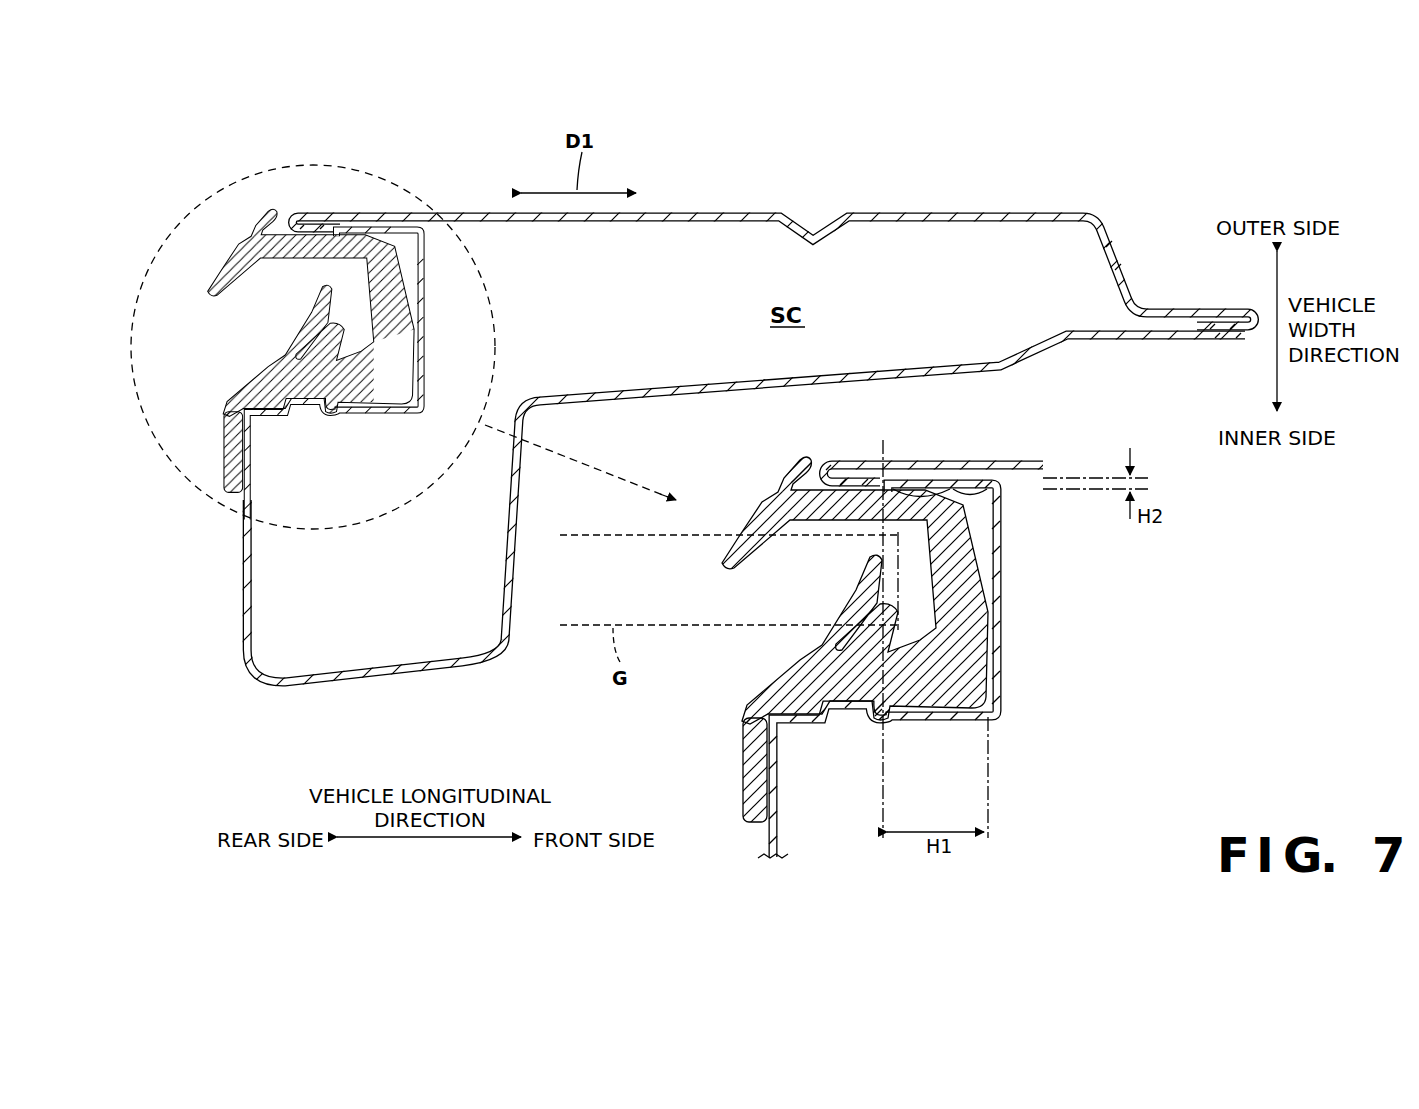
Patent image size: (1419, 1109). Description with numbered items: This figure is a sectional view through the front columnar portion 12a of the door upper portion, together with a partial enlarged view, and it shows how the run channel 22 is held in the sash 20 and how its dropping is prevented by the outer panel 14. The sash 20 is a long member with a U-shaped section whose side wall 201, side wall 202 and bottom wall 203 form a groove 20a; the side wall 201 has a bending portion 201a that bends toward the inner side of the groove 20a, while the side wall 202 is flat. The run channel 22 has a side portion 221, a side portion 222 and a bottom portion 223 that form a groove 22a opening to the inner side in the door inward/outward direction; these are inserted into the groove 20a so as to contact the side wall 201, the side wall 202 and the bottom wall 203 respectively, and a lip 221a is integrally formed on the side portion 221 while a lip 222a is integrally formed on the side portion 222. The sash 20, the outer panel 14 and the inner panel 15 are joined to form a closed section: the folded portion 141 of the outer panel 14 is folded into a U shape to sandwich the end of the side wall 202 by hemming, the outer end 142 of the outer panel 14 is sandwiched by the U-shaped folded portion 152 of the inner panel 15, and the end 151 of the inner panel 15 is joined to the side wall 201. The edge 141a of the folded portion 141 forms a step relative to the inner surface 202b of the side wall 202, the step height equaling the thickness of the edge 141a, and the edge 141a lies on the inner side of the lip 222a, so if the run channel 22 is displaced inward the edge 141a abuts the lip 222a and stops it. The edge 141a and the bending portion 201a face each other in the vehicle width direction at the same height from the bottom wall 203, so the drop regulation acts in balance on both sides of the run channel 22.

The columnar portion 12a is at (1076, 165).
The outer panel 14 is at (740, 213).
The folded portion 141 is at (300, 217).
The edge 141a is at (838, 460).
The end 142 is at (1228, 330).
The inner panel 15 is at (1050, 355).
The end 151 is at (235, 432).
The folded portion 152 is at (1240, 306).
The sash 20 is at (1050, 682).
The groove 20a is at (977, 512).
The side wall 201 is at (307, 402).
The bending portion 201a is at (870, 712).
The side wall 202 is at (372, 227).
The inner surface 202b is at (970, 480).
The bottom wall 203 is at (423, 348).
The run channel 22 is at (722, 728).
The groove 22a is at (920, 580).
The side portion 221 is at (265, 371).
The lip 221a is at (890, 718).
The side portion 222 is at (244, 240).
The lip 222a is at (890, 470).
The bottom portion 223 is at (397, 290).